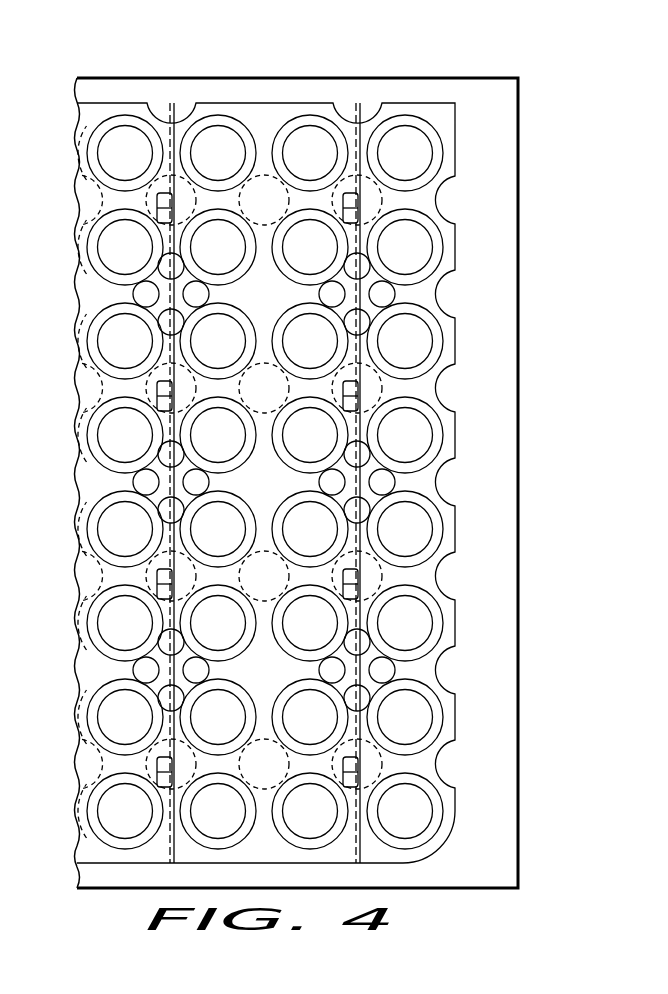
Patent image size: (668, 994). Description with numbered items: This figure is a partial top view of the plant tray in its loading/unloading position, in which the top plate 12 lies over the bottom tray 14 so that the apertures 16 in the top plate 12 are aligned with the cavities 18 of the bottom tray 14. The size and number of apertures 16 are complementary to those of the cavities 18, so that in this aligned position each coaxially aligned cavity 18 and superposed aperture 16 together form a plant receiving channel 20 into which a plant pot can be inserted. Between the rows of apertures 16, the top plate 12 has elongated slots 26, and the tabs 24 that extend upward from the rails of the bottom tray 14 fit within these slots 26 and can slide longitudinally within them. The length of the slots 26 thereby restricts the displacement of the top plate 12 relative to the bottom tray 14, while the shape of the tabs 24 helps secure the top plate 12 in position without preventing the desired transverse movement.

The top plate 12 is at (286, 102).
The bottom tray 14 is at (222, 77).
The apertures 16 is at (487, 117).
The cavities 18 is at (435, 254).
The plant receiving channels 20 is at (420, 160).
The tabs 24 is at (357, 391).
The slots 26 is at (160, 778).